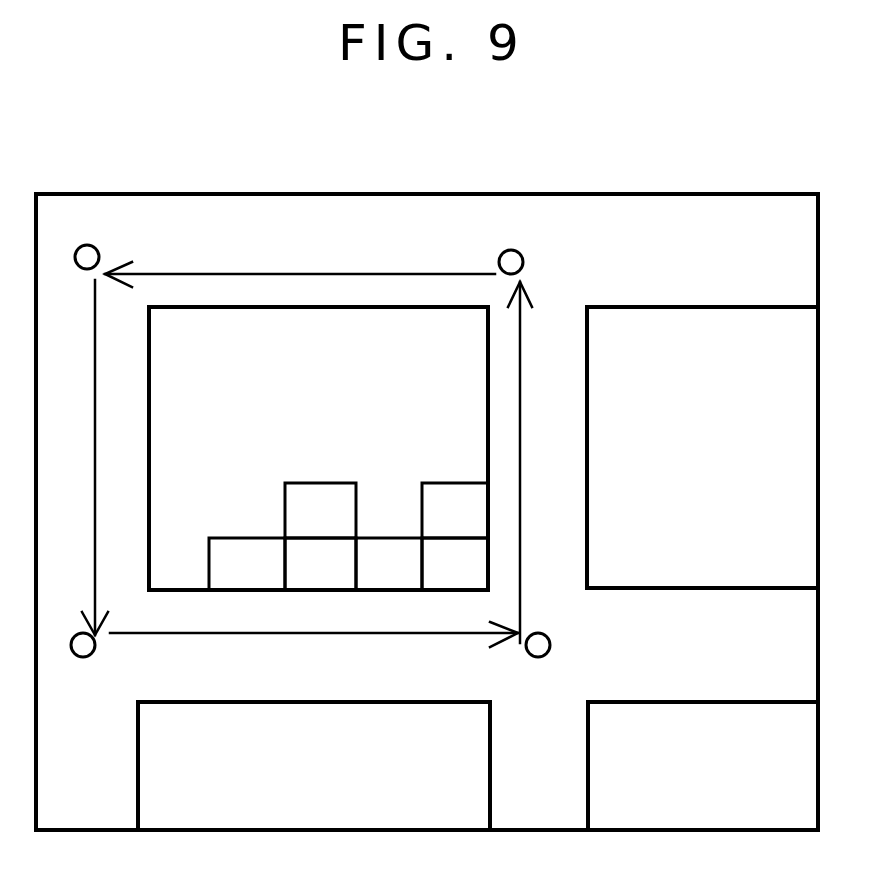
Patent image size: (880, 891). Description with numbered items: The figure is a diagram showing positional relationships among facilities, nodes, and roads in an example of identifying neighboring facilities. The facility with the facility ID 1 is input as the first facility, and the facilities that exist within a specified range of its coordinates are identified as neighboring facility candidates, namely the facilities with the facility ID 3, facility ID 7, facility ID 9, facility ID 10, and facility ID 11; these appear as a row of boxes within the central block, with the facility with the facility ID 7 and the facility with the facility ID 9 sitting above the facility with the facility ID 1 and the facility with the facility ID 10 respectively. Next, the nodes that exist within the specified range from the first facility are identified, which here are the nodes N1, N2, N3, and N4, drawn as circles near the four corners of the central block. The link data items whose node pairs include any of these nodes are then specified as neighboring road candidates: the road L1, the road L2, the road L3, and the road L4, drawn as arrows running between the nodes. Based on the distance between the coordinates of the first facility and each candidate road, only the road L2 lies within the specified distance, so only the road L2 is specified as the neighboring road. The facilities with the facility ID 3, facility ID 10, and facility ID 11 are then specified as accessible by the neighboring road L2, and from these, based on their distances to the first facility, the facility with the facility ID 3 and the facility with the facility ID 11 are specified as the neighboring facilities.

The facility with facility ID 1 is at (320, 564).
The facility with facility ID 3 is at (389, 564).
The facility with facility ID 7 is at (320, 510).
The facility with facility ID 9 is at (455, 510).
The facility with facility ID 10 is at (455, 564).
The facility with facility ID 11 is at (247, 564).
The node N1 is at (521, 666).
The node N2 is at (84, 665).
The node N3 is at (86, 240).
The node N4 is at (511, 243).
The road L1 is at (532, 462).
The road L2 is at (314, 652).
The road L3 is at (75, 457).
The road L4 is at (300, 259).